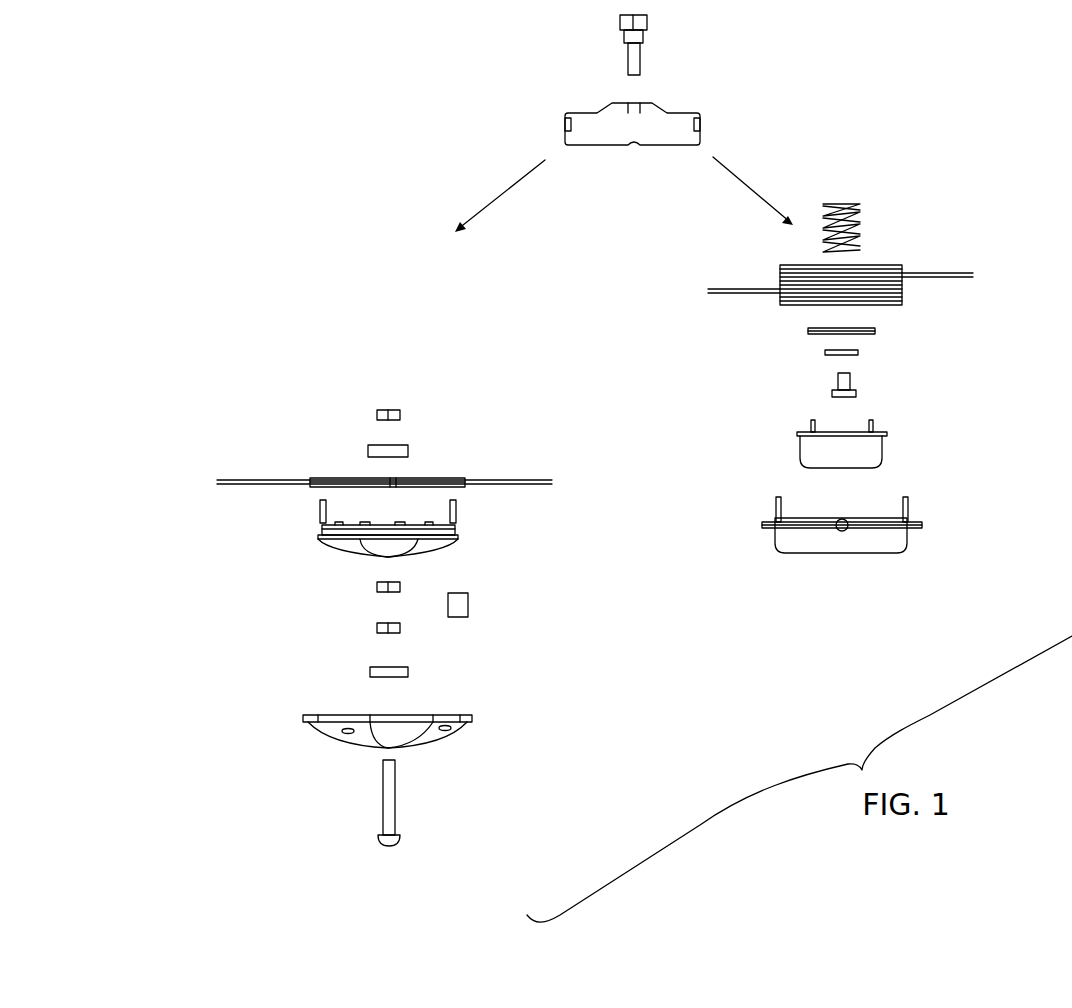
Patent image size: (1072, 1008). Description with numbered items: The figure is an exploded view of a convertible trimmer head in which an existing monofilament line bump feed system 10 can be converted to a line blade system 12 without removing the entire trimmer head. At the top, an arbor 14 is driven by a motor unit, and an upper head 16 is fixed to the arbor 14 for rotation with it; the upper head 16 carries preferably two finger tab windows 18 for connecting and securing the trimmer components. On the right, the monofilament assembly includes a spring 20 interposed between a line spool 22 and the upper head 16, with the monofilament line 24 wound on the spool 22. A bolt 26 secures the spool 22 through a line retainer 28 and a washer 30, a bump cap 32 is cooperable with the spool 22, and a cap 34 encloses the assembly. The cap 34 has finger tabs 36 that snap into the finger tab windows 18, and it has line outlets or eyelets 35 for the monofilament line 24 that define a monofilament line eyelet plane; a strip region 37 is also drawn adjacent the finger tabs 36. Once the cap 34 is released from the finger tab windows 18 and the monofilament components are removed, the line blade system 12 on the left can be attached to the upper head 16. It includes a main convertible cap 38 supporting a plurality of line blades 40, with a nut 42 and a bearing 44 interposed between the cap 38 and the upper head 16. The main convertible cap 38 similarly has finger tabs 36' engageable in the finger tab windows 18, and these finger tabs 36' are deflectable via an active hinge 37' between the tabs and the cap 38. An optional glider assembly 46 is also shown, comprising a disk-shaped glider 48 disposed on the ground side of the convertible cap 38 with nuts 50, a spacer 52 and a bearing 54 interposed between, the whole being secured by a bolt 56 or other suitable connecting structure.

The monofilament line bump feed system 10 is at (925, 133).
The line blade system 12 is at (238, 335).
The arbor 14 is at (652, 32).
The upper head 16 is at (685, 80).
The finger tab windows 18 is at (560, 128).
The spring 20 is at (870, 218).
The line spool 22 is at (890, 262).
The monofilament line 24 is at (940, 278).
The bolt 26 is at (858, 382).
The line retainer 28 is at (805, 333).
The washer 30 is at (818, 353).
The bump cap 32 is at (875, 457).
The cap 34 is at (883, 545).
The line outlets/eyelets 35 is at (841, 532).
The finger tabs 36 is at (844, 493).
The strip 37 is at (849, 521).
The finger tabs 36' is at (379, 507).
The active hinge 37' is at (390, 529).
The main convertible cap 38 is at (328, 550).
The line blades 40 is at (255, 480).
The nut 42 is at (395, 405).
The bearing 44 is at (365, 447).
The glider assembly 46 is at (468, 756).
The disk-shaped glider 48 is at (330, 745).
The nuts 50 is at (407, 628).
The spacer 52 is at (475, 607).
The bearing 54 is at (393, 673).
The bolt 56 is at (378, 822).